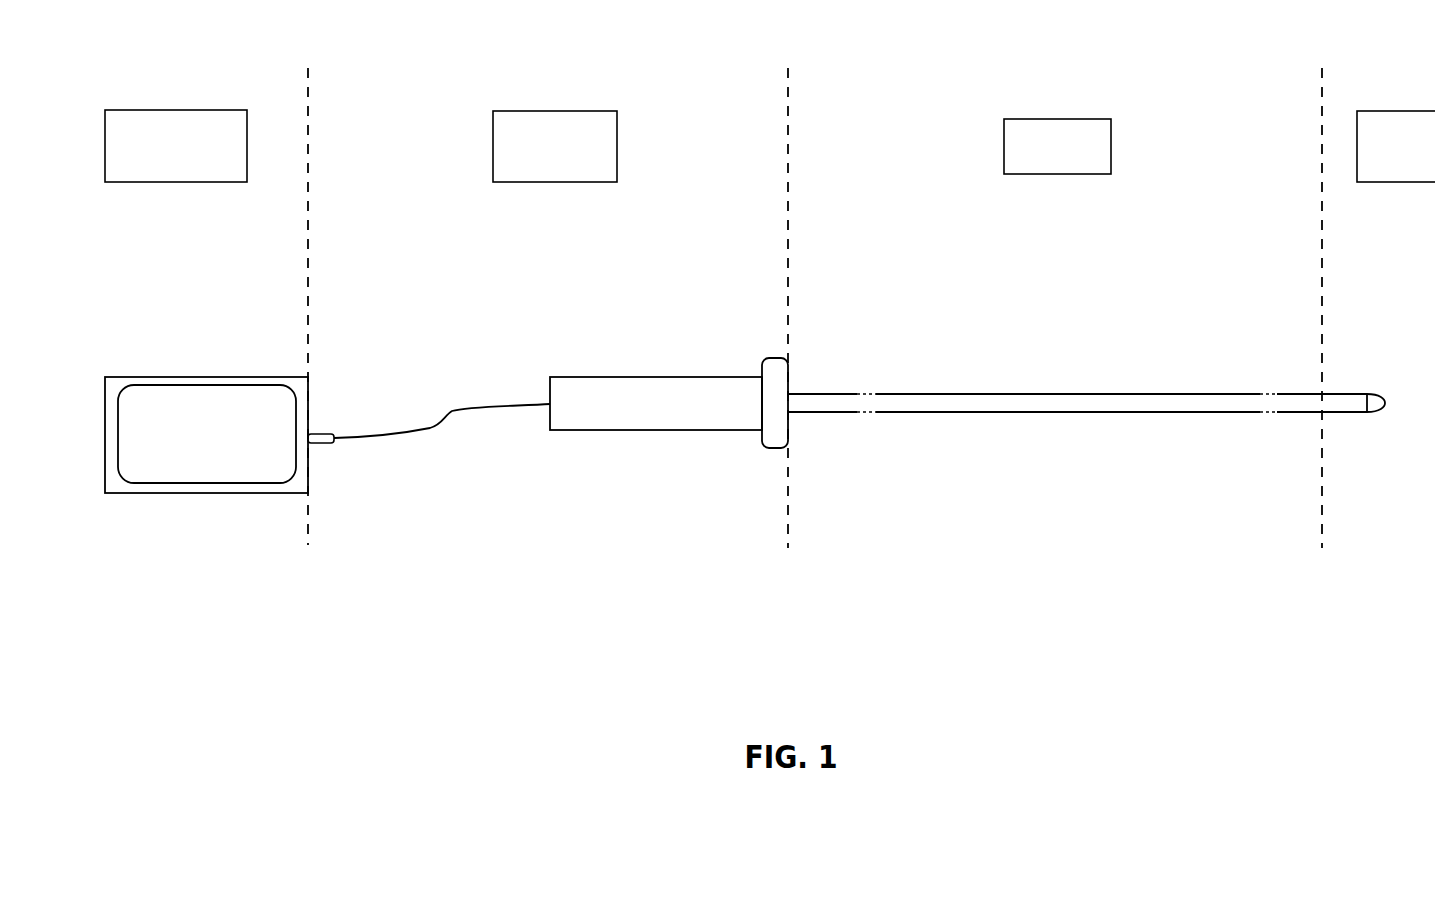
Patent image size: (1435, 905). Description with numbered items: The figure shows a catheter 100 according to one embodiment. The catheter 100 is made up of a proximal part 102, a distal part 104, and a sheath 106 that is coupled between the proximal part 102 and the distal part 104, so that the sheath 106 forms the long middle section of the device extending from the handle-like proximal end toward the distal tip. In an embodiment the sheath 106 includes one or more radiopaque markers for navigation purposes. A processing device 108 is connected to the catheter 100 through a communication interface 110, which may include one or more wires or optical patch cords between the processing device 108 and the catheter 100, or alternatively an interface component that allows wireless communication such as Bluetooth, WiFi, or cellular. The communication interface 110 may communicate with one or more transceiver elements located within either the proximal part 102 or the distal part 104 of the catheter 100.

The catheter 100 is at (668, 475).
The proximal part 102 is at (556, 111).
The distal part 104 is at (1400, 111).
The sheath 106 is at (1058, 119).
The processing device 108 is at (175, 110).
The communication interface 110 is at (320, 432).